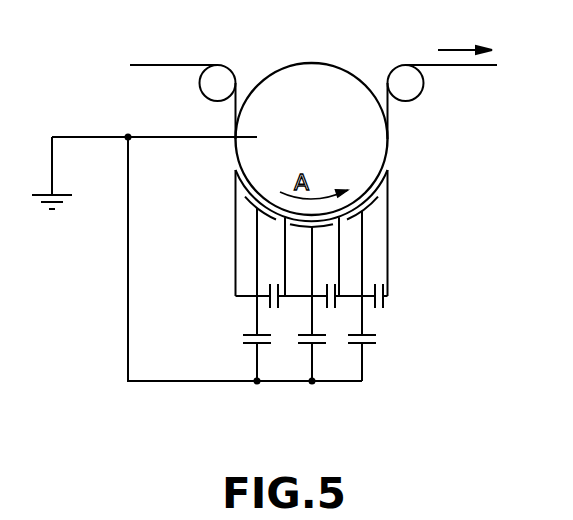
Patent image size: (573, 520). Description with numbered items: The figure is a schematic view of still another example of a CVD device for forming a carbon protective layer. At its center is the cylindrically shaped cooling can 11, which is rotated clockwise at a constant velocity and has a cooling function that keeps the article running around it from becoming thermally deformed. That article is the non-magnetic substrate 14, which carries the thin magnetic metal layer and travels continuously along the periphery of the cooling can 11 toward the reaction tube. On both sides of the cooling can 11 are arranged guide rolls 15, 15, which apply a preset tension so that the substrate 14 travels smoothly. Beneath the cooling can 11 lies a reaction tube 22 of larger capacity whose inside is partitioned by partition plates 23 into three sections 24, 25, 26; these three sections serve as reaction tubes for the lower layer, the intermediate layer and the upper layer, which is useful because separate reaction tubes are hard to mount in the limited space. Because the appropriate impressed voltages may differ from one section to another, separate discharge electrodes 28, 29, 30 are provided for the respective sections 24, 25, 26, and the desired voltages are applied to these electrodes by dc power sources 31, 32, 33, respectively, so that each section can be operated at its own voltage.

The cooling can 11 is at (315, 70).
The non-magnetic substrate 14 is at (465, 67).
The guide rolls 15 is at (219, 78).
The reaction tube 22 is at (389, 211).
The partition plates 23 is at (284, 254).
The reaction section 24 is at (243, 226).
The reaction section 25 is at (300, 283).
The reaction section 26 is at (373, 234).
The discharge electrode 28 is at (242, 198).
The discharge electrode 29 is at (303, 228).
The discharge electrode 30 is at (383, 196).
The dc power source 31 is at (245, 345).
The dc power source 32 is at (322, 345).
The dc power source 33 is at (370, 345).